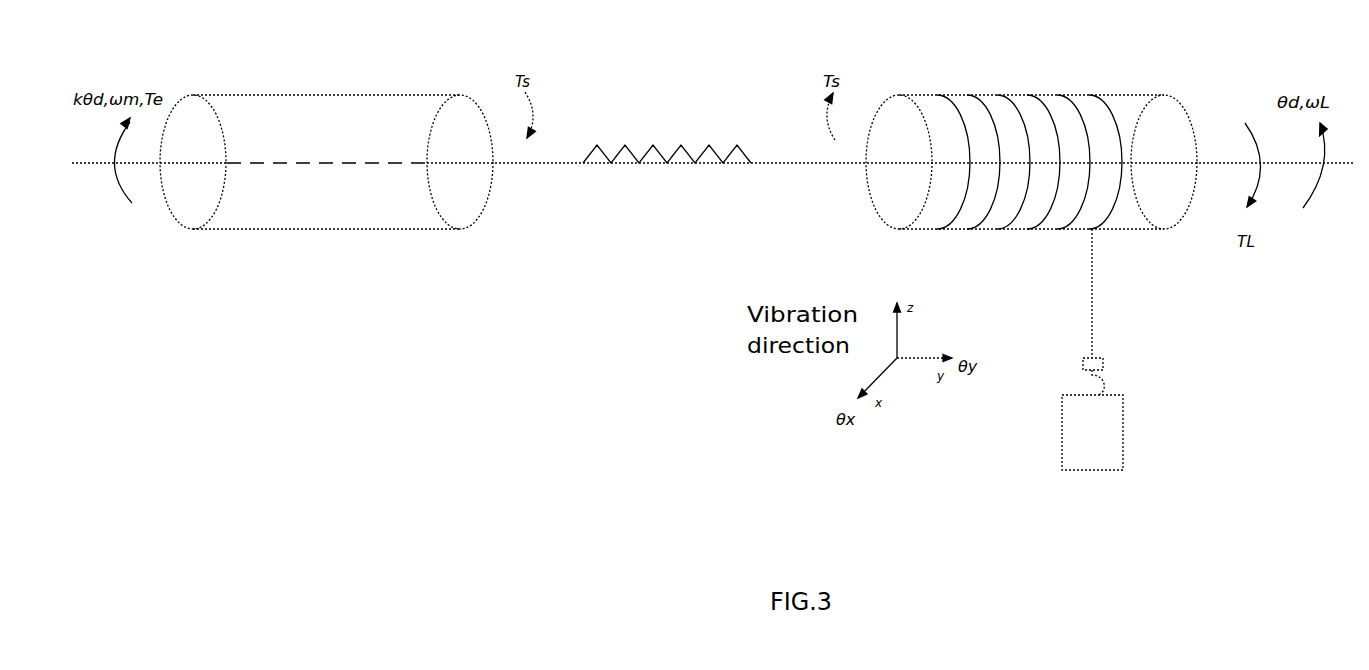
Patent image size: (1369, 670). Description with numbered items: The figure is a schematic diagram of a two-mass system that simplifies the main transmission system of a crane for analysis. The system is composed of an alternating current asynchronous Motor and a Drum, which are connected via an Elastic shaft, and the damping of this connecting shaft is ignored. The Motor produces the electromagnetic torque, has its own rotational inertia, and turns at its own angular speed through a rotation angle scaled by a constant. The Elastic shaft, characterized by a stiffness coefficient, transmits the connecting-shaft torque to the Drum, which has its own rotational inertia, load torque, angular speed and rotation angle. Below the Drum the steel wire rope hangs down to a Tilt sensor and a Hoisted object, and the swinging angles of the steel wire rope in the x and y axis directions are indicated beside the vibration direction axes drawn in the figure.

The alternating current asynchronous motor Motor is at (326, 155).
The elastic shaft Elastic shaft is at (667, 145).
The drum Drum is at (1031, 156).
The tilt sensor Tilt sensor is at (1170, 358).
The hoisted object Hoisted object is at (1200, 432).